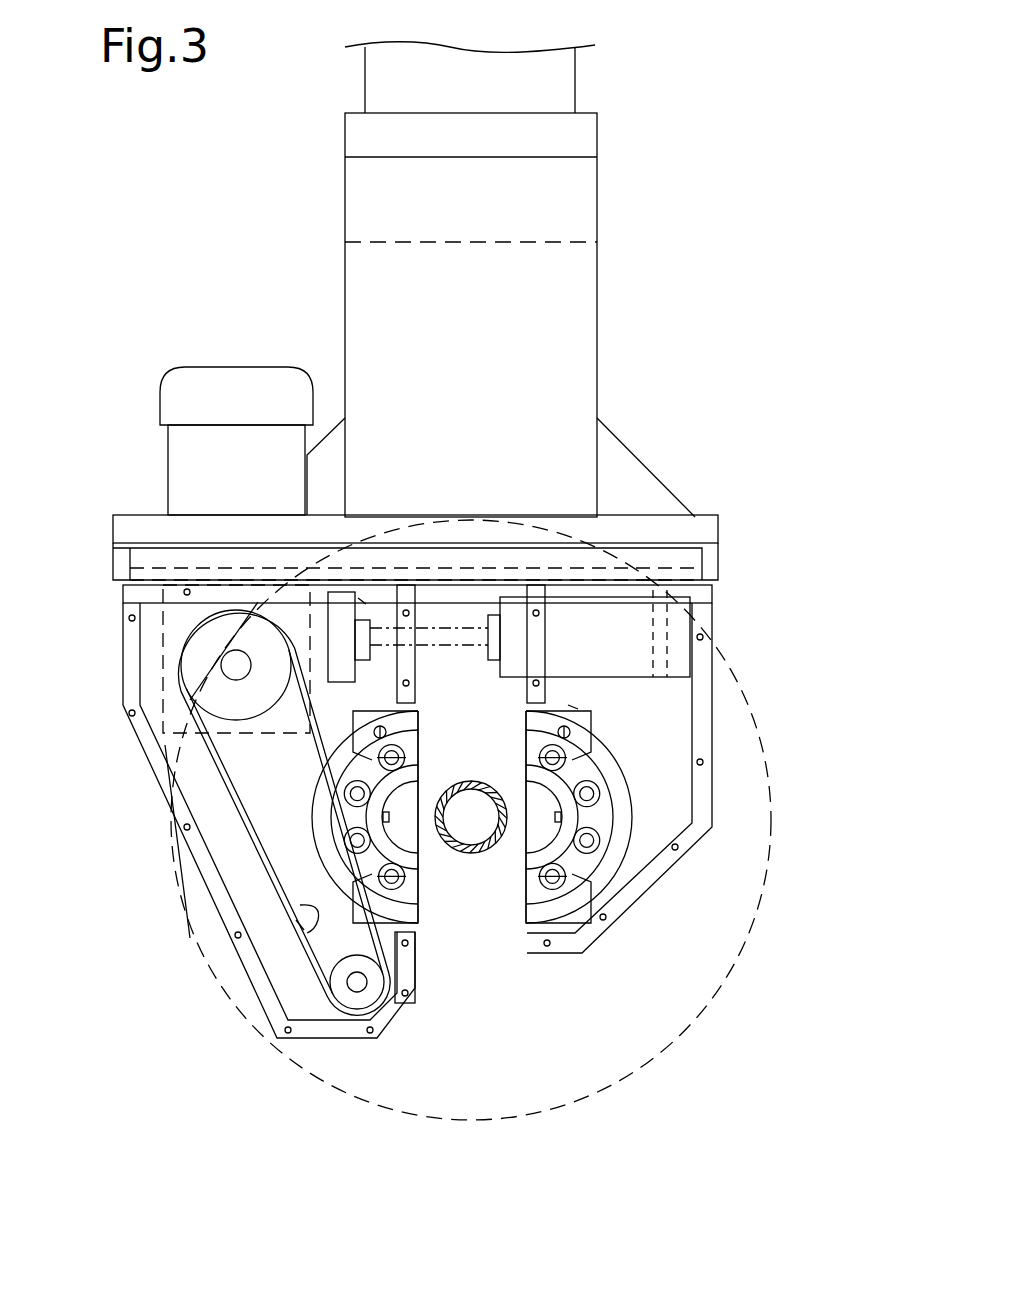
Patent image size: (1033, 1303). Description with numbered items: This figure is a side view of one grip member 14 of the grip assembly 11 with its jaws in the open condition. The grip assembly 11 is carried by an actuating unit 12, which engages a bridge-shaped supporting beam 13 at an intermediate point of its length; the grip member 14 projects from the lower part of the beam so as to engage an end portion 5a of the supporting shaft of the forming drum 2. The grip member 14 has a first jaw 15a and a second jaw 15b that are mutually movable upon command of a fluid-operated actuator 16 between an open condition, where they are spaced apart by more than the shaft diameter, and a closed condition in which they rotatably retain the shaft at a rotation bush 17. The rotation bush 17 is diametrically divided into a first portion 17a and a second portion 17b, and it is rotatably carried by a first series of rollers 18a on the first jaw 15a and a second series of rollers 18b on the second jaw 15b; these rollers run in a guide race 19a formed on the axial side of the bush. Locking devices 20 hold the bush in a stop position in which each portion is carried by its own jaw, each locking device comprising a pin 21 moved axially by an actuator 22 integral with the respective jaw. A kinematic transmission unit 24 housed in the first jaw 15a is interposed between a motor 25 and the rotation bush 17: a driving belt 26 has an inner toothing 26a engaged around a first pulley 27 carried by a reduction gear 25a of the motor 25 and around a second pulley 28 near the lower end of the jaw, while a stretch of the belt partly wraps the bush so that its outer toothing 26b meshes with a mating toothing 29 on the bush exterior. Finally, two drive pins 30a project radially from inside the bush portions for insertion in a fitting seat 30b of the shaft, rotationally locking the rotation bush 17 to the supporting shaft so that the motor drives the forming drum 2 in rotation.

The forming drum 2 is at (232, 1025).
The end portion of the supporting shaft 5a is at (448, 845).
The grip assembly 11 is at (645, 450).
The actuating unit 12 is at (576, 75).
The bridge-shaped supporting beam 13 is at (548, 205).
The grip member 14 is at (520, 585).
The first jaw 15a is at (130, 727).
The second jaw 15b is at (712, 705).
The fluid-operated actuator 16 is at (607, 632).
The rotation bush 17 is at (537, 913).
The first portion of the rotation bush 17a is at (383, 850).
The second portion of the rotation bush 17b is at (560, 790).
The first series of rollers 18a is at (357, 842).
The second series of rollers 18b is at (552, 878).
The guide race 19a is at (345, 817).
The locking device 20 is at (604, 706).
The pin 21 is at (362, 600).
The actuator 22 is at (398, 703).
The kinematic transmission unit 24 is at (210, 760).
The motor 25 is at (245, 390).
The reduction gear 25a is at (178, 613).
The driving belt 26 is at (298, 927).
The inner toothing 26a is at (303, 740).
The outer toothing 26b is at (300, 745).
The first pulley 27 is at (197, 660).
The second pulley 28 is at (347, 1000).
The mating toothing 29 is at (587, 720).
The drive pin 30a is at (392, 815).
The fitting seat 30b is at (482, 808).